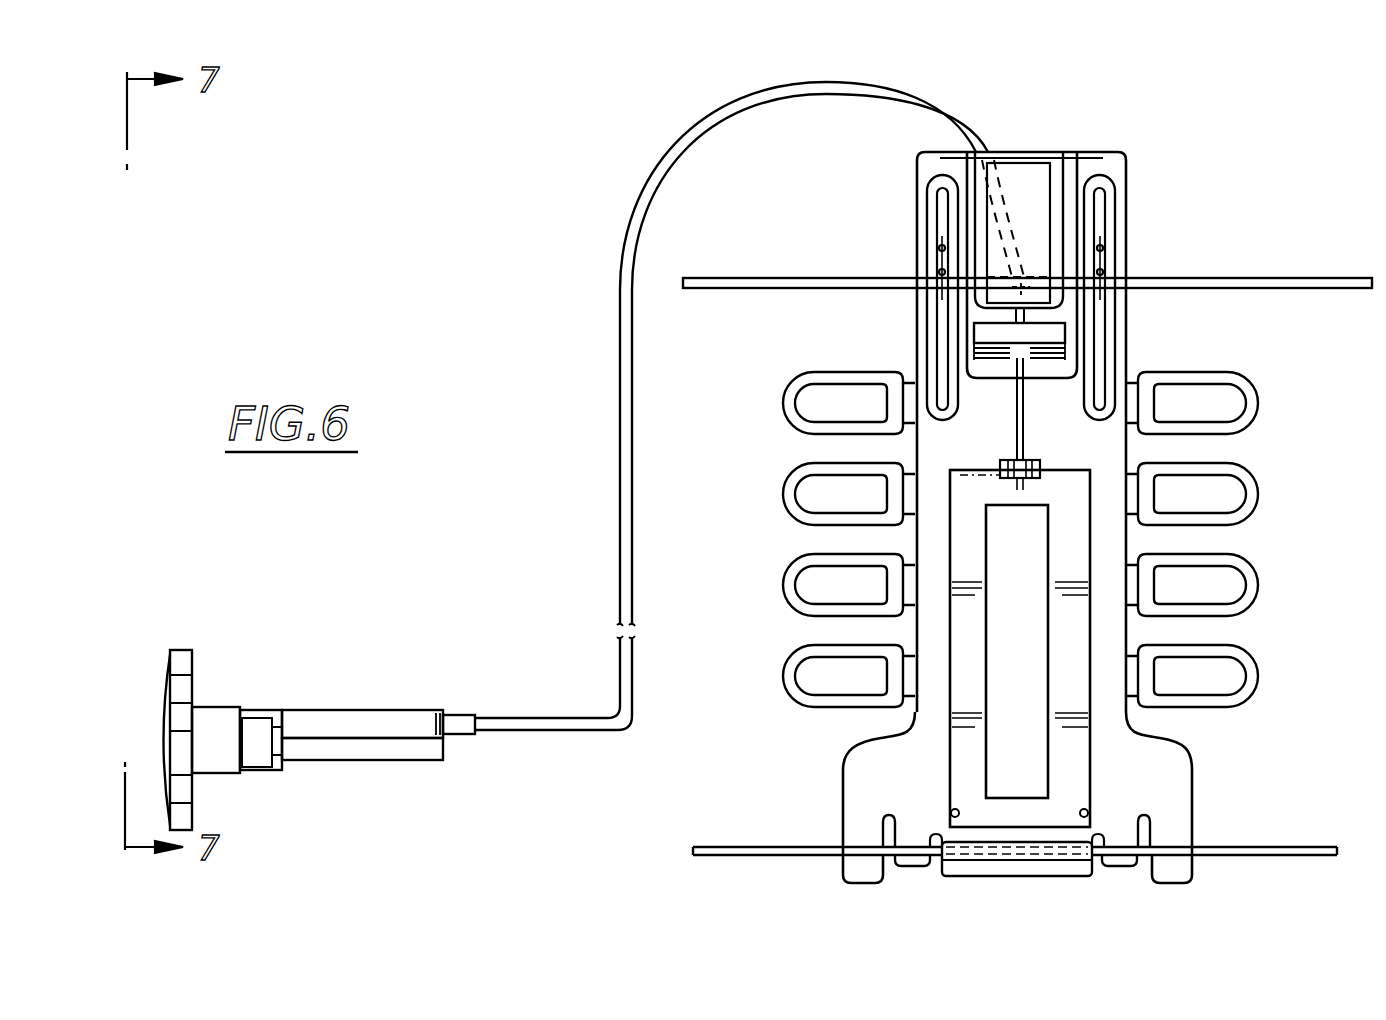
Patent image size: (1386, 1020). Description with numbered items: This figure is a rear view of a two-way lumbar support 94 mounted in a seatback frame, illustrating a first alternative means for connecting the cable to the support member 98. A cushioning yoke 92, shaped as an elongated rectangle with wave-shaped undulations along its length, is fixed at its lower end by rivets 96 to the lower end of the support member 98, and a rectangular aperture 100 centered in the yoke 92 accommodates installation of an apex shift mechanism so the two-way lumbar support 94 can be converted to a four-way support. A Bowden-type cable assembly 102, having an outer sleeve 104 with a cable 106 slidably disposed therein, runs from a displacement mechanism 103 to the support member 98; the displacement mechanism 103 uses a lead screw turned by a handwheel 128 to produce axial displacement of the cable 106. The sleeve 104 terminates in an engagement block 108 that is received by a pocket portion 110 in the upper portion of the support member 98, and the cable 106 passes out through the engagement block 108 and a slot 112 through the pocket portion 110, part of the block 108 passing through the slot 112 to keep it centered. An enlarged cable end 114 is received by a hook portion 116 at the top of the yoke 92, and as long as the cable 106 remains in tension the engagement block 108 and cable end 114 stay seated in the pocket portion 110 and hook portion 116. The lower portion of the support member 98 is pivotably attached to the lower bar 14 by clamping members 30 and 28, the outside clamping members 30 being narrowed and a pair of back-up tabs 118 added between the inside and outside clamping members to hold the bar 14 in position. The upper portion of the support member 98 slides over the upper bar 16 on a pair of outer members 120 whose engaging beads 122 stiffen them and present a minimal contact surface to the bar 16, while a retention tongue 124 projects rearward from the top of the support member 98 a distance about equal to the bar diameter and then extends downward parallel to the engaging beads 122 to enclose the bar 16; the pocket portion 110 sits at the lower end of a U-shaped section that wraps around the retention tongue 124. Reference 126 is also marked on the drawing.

The lower bar 14 is at (1296, 846).
The upper bar 16 is at (1305, 278).
The inside clamping member 28 is at (998, 878).
The outside clamping members 30 is at (848, 882).
The cushioning yoke 92 is at (1092, 750).
The two-way lumbar support 94 is at (550, 313).
The rivets 96 is at (952, 812).
The support member 98 is at (1252, 440).
The rectangular aperture 100 is at (1046, 548).
The Bowden-type cable assembly 102 is at (612, 475).
The displacement mechanism 103 is at (405, 710).
The outer sleeve 104 is at (620, 580).
The cable 106 is at (1024, 437).
The engagement block 108 is at (1057, 332).
The pocket portion 110 is at (982, 367).
The slot 112 is at (1060, 357).
The enlarged cable end 114 is at (1016, 486).
The hook portion 116 is at (1005, 462).
The back-up tabs 118 is at (910, 866).
The outer members 120 is at (917, 224).
The engaging beads 122 is at (942, 200).
The retention tongue 124 is at (1040, 165).
The bore 126 is at (1062, 258).
The handwheel 128 is at (190, 652).